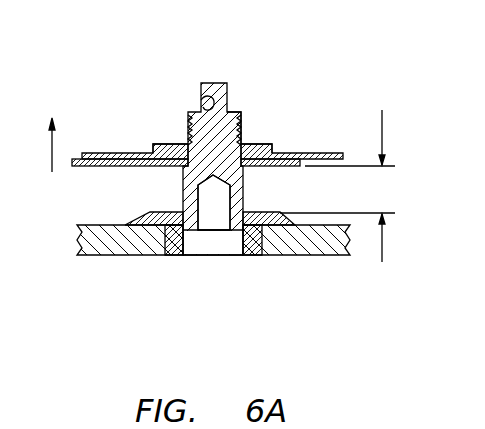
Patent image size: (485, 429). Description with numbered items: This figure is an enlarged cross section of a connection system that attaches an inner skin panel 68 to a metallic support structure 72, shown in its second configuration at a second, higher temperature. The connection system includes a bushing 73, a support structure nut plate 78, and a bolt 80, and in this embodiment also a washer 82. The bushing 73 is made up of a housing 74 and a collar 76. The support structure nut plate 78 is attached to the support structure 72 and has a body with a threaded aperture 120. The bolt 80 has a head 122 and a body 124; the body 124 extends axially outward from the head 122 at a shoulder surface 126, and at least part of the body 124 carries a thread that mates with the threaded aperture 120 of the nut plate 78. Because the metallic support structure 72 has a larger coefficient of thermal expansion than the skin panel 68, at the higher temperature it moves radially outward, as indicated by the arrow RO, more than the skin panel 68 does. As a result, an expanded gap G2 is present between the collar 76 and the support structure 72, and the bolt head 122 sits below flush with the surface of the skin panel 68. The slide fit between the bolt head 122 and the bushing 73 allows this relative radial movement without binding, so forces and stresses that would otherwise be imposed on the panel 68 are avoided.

The inner skin panel 68 is at (337, 256).
The support structure 72 is at (317, 150).
The bushing 73 is at (257, 262).
The housing 74 is at (160, 256).
The collar 76 is at (160, 198).
The support structure nut plate 78 is at (283, 150).
The bolt 80 is at (213, 83).
The washer 82 is at (130, 222).
The threaded aperture 120 is at (203, 100).
The head 122 is at (210, 215).
The body 124 is at (232, 103).
The shoulder surface 126 is at (253, 148).
The expanded gap G2 is at (383, 122).
The radially outward arrow RO is at (50, 128).